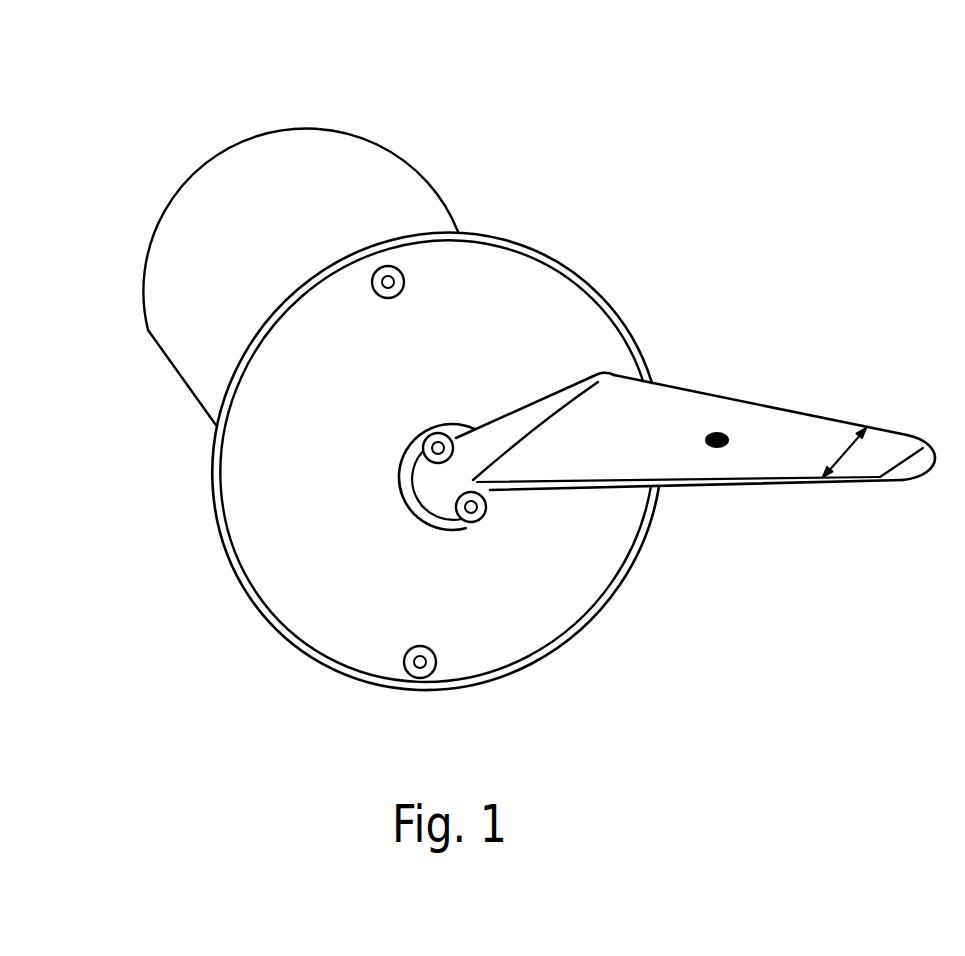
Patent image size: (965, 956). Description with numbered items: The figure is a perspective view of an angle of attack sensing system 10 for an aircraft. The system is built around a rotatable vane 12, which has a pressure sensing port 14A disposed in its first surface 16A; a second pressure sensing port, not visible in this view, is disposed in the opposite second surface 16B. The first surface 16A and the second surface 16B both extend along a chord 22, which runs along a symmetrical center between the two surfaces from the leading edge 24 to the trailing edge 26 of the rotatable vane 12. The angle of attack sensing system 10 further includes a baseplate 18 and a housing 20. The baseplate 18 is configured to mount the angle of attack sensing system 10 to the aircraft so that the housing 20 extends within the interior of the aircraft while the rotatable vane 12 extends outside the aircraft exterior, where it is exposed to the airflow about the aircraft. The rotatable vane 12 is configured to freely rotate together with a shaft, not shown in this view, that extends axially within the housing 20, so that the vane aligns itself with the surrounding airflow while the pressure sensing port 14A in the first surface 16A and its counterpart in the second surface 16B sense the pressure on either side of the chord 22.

The angle of attack sensing system 10 is at (166, 86).
The rotatable vane 12 is at (910, 476).
The pressure sensing port 14A is at (725, 433).
The first surface 16A is at (643, 401).
The second surface 16B is at (683, 507).
The baseplate 18 is at (293, 578).
The housing 20 is at (323, 163).
The chord 22 is at (848, 453).
The leading edge 24 is at (613, 487).
The trailing edge 26 is at (683, 387).